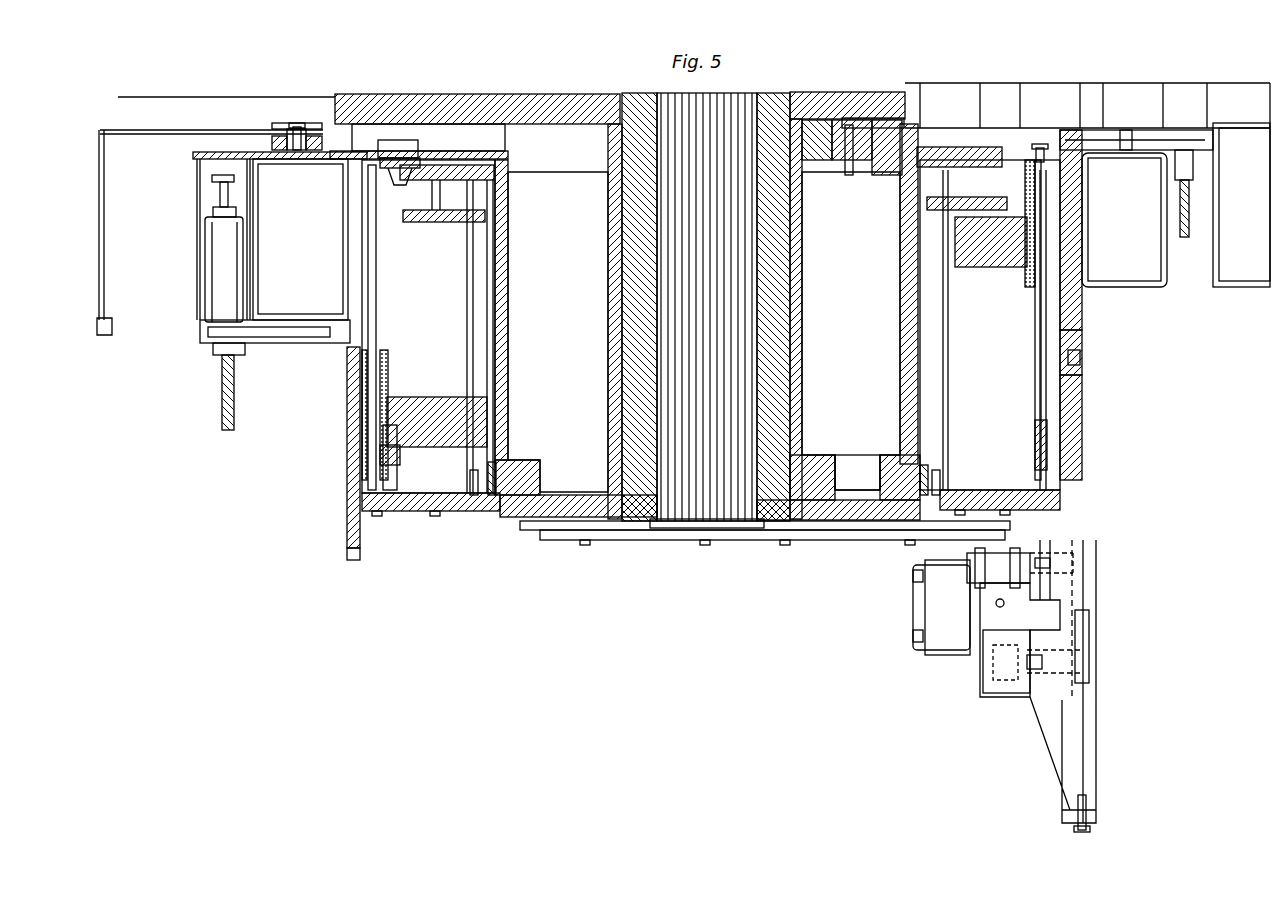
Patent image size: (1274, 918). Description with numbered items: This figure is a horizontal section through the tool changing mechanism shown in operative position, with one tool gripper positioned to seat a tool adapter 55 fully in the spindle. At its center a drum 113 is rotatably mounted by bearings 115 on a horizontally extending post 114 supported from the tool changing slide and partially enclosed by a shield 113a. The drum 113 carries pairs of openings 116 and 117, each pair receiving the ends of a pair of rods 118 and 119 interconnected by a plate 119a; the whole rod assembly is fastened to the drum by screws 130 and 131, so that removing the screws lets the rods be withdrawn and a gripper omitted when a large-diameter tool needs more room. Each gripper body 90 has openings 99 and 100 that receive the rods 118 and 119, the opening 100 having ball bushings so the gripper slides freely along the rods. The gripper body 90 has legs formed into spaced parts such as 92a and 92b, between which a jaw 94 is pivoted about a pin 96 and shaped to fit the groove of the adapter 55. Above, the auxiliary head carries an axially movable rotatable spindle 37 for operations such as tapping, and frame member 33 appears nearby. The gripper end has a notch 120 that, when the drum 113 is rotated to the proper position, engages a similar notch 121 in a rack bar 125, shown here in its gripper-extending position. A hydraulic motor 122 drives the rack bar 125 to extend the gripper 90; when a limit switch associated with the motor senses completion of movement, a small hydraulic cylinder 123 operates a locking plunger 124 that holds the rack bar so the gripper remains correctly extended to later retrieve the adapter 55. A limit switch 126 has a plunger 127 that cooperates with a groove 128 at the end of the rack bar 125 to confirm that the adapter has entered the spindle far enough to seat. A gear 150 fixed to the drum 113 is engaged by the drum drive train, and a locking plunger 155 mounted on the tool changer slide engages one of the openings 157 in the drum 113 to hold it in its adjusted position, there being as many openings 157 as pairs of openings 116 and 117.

The frame member 33 is at (1241, 205).
The rotatable spindle 37 is at (960, 115).
The tool adapter 55 is at (215, 300).
The gripper body 90 is at (283, 345).
The spaced part of leg 92a is at (1210, 148).
The spaced part of leg 92b is at (1240, 128).
The pivoted jaw 94 is at (1185, 150).
The pin 96 is at (1126, 130).
The opening 99 is at (460, 445).
The opening 100 is at (437, 422).
The drum 113 is at (525, 524).
The shield 113a is at (132, 332).
The horizontally extending post 114 is at (805, 335).
The bearings 115 is at (840, 465).
The opening 116 is at (362, 172).
The opening 117 is at (453, 228).
The rod 118 is at (360, 400).
The rod 119 is at (465, 368).
The plate 119a is at (400, 515).
The notch 120 is at (348, 555).
The notch 121 is at (1083, 345).
The hydraulic motor 122 is at (940, 650).
The hydraulic cylinder 123 is at (968, 560).
The locking plunger 124 is at (1080, 557).
The rack bar 125 is at (1083, 440).
The limit switch 126 is at (1010, 690).
The plunger 127 is at (1085, 655).
The groove 128 is at (1092, 678).
The screw 130 is at (512, 510).
The screw 131 is at (488, 510).
The gear 150 is at (540, 165).
The locking plunger 155 is at (396, 195).
The opening 157 is at (380, 178).